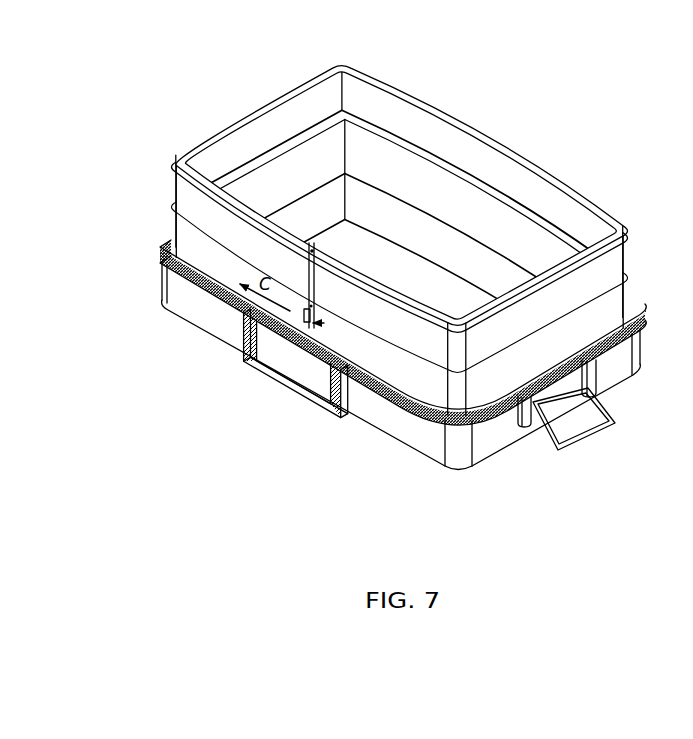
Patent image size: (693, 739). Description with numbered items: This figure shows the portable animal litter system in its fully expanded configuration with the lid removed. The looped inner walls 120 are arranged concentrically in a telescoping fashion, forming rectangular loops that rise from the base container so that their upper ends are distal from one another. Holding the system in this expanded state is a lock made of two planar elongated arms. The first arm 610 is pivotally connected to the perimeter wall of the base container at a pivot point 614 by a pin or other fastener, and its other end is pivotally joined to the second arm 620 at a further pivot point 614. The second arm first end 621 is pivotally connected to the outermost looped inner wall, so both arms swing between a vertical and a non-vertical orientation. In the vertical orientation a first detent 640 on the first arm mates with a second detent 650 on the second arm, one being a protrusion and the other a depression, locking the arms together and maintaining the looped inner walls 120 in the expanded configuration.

The looped inner walls 120 is at (170, 193).
The first arm 610 is at (235, 312).
The pivot point 614 is at (318, 323).
The second arm 620 is at (348, 398).
The second arm first end 621 is at (315, 243).
The first detent 640 is at (322, 193).
The second detent 650 is at (388, 203).